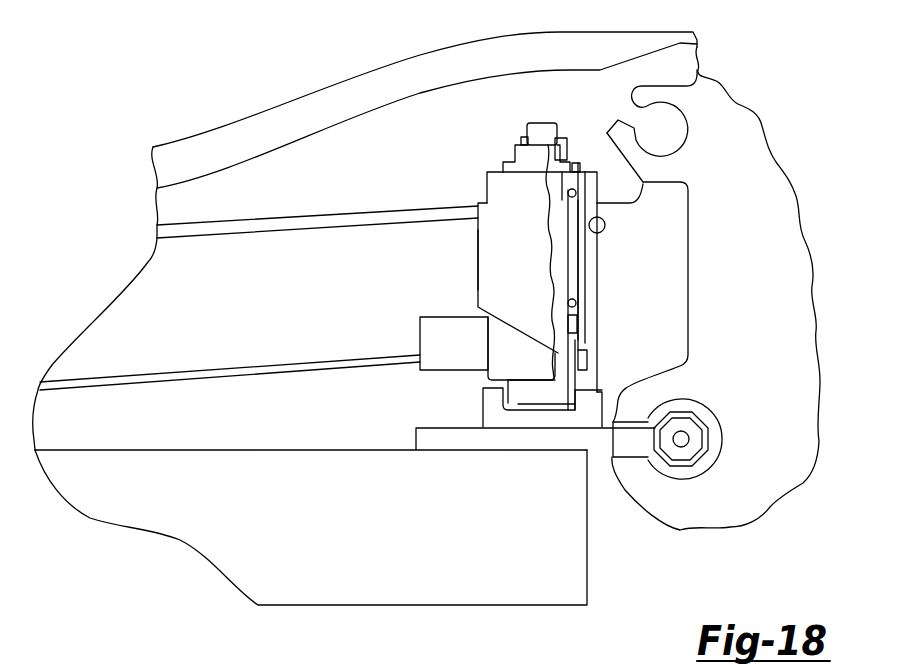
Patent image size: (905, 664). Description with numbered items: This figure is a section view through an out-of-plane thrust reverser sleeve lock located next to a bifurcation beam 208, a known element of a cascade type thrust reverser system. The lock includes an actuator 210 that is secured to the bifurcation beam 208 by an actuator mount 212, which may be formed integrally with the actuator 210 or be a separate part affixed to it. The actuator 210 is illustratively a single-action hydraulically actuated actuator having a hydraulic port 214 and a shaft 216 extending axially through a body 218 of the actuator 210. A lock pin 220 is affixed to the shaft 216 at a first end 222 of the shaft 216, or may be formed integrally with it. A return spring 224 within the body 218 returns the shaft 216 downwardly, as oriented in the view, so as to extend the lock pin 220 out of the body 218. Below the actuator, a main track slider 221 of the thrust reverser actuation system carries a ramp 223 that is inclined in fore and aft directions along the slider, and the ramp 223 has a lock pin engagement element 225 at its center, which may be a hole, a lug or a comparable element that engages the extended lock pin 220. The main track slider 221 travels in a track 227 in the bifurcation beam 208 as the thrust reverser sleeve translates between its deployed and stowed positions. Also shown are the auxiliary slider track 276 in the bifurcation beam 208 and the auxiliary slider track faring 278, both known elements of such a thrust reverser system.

The bifurcation beam 208 is at (760, 180).
The actuator 210 is at (478, 169).
The actuator mount 212 is at (470, 250).
The hydraulic port 214 is at (410, 332).
The shaft 216 is at (548, 123).
The body 218 is at (477, 280).
The lock pin 220 is at (483, 393).
The main track slider 221 is at (428, 462).
The first end 222 is at (650, 377).
The ramp 223 is at (595, 415).
The return spring 224 is at (590, 275).
The lock pin engagement element 225 is at (517, 405).
The track 227 is at (708, 410).
The auxiliary slider track 276 is at (690, 107).
The auxiliary slider track faring 278 is at (393, 47).